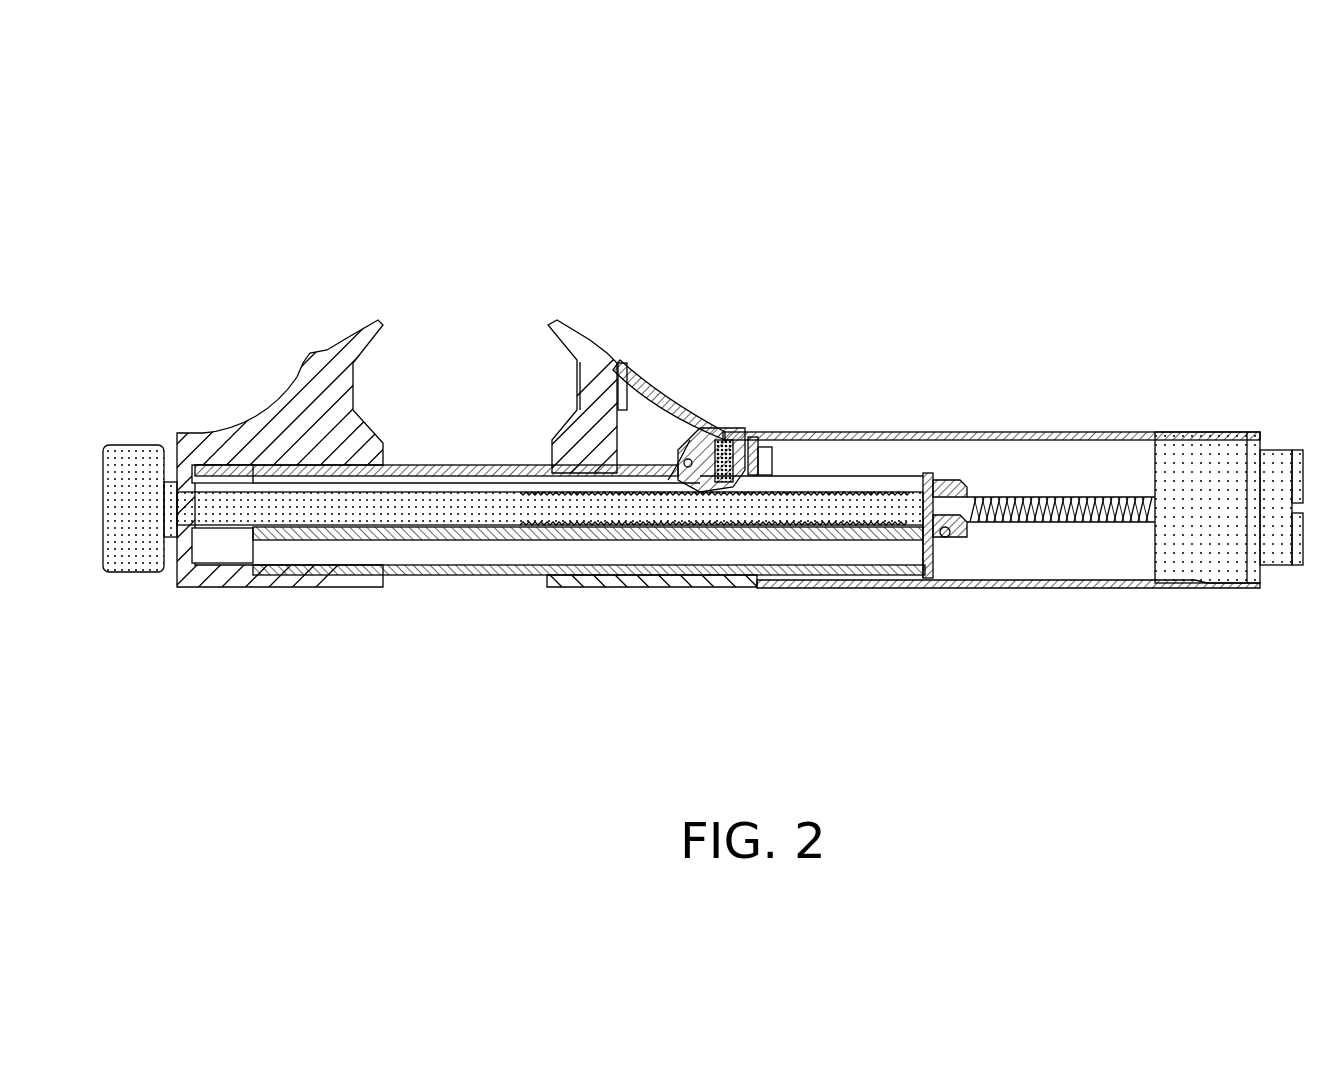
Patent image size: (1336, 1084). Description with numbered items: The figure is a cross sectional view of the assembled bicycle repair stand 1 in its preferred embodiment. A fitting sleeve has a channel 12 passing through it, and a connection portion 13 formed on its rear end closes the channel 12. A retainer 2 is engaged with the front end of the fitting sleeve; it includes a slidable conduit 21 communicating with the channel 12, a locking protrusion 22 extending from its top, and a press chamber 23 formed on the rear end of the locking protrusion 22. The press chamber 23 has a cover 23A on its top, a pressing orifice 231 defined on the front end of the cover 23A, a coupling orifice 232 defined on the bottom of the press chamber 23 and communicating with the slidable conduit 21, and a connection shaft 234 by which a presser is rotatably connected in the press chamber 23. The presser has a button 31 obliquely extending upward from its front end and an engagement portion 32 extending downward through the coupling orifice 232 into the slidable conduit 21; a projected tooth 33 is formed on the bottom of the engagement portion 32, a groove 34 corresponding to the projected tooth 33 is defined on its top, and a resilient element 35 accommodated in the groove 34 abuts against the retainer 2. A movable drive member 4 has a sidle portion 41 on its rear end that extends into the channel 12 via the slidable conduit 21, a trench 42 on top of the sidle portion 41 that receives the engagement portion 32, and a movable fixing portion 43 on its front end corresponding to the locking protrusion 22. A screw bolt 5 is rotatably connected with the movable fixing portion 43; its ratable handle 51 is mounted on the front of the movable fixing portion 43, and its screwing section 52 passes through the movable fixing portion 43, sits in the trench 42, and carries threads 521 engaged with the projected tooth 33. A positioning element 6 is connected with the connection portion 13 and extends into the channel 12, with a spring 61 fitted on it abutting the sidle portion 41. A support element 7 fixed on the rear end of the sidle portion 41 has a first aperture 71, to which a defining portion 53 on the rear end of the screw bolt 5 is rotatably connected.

The bicycle repair stand 1 is at (1015, 355).
The channel 12 is at (1100, 570).
The connection portion 13 is at (1275, 450).
The retainer 2 is at (572, 386).
The slidable conduit 21 is at (567, 548).
The locking protrusion 22 is at (587, 335).
The press chamber 23 is at (633, 390).
The cover 23A is at (627, 413).
The pressing orifice 231 is at (680, 428).
The coupling orifice 232 is at (668, 480).
The connection shaft 234 is at (690, 460).
The button 31 is at (660, 420).
The engagement portion 32 is at (770, 465).
The projected tooth 33 is at (837, 490).
The groove 34 is at (740, 475).
The resilient element 35 is at (740, 447).
The movable drive member 4 is at (485, 693).
The sidle portion 41 is at (450, 578).
The trench 42 is at (450, 485).
The movable fixing portion 43 is at (360, 590).
The screw bolt 5 is at (230, 515).
The ratable handle 51 is at (135, 450).
The screwing section 52 is at (913, 480).
The threads 521 is at (883, 485).
The defining portion 53 is at (947, 480).
The positioning element 6 is at (1043, 497).
The spring 61 is at (1077, 497).
The support element 7 is at (938, 545).
The first aperture 71 is at (957, 538).